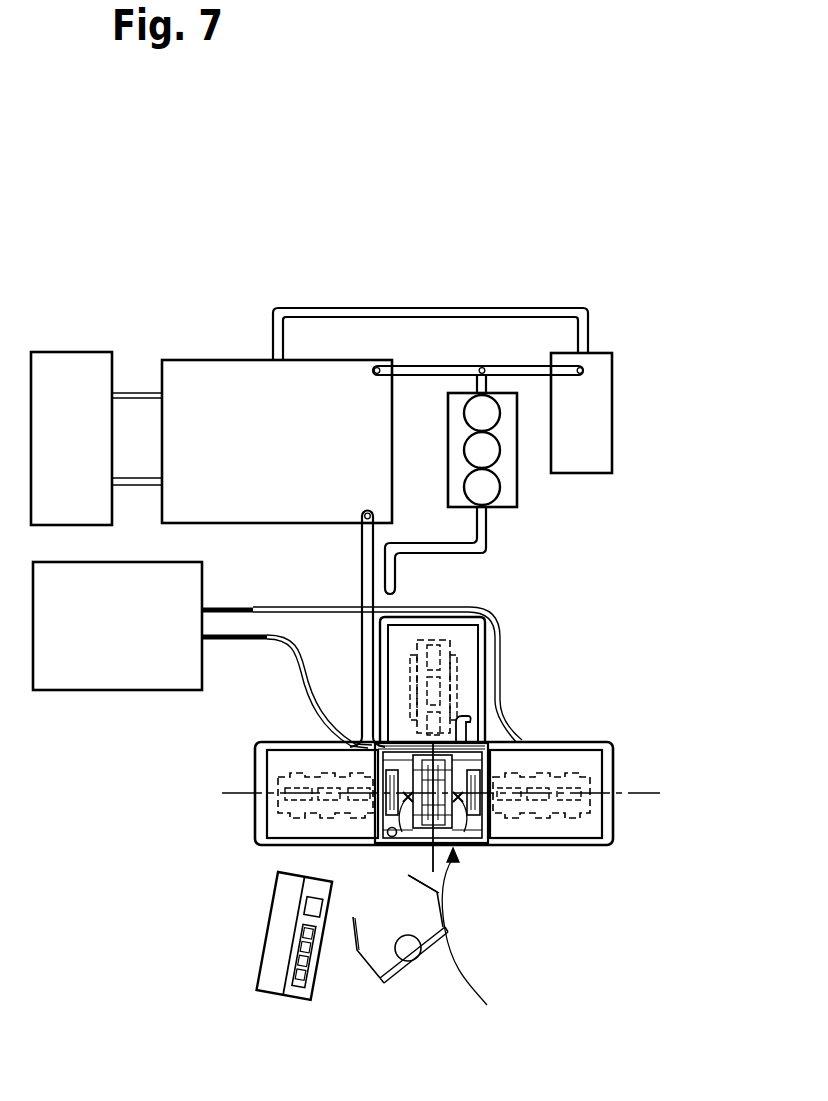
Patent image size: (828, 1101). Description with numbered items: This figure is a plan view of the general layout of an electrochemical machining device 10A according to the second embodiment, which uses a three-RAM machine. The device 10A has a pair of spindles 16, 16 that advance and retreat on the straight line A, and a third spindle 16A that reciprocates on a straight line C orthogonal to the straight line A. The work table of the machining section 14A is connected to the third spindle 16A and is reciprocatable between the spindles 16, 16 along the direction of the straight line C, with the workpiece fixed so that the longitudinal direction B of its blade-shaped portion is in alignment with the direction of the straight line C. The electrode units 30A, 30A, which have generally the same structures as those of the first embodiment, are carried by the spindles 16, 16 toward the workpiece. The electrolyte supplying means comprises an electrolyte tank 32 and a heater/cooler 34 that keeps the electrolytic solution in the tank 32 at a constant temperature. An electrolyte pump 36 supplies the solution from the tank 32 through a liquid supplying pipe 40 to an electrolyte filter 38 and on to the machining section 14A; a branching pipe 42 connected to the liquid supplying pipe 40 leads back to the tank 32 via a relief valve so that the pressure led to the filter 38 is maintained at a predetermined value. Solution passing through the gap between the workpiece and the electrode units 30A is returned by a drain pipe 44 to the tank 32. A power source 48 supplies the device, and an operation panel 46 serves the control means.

The heater/cooler 34 is at (72, 352).
The electrolyte tank 32 is at (213, 358).
The liquid supplying pipe 40 is at (533, 365).
The electrolyte pump 36 is at (613, 423).
The branching pipe 42 is at (432, 365).
The electrolyte filter 38 is at (517, 490).
The drain pipe 44 is at (360, 568).
The power source 48 is at (110, 690).
The third spindle 16A is at (452, 648).
The electrochemical machining device 10A is at (569, 856).
The spindle 16 is at (280, 823).
The spindle reciprocating direction A is at (637, 793).
The electrode unit 30A is at (403, 840).
The machining section 14A is at (436, 858).
The longitudinal direction of the blade-shaped portion B is at (434, 944).
The workpiece feeding direction C is at (434, 944).
The operation panel 46 is at (315, 985).